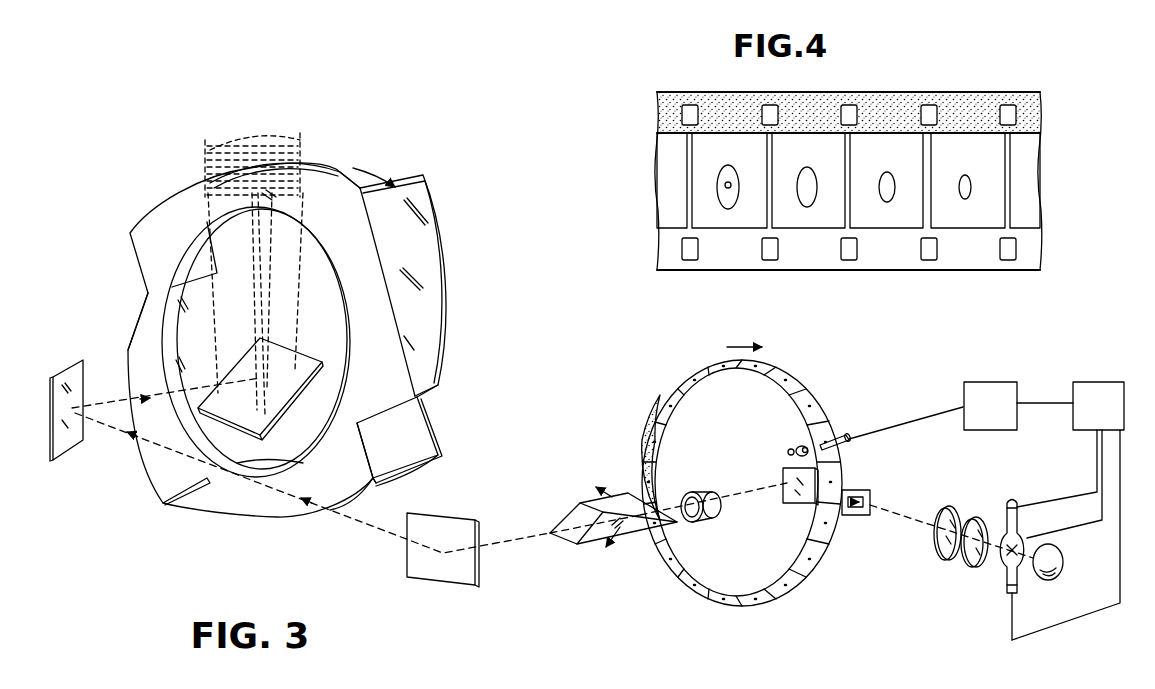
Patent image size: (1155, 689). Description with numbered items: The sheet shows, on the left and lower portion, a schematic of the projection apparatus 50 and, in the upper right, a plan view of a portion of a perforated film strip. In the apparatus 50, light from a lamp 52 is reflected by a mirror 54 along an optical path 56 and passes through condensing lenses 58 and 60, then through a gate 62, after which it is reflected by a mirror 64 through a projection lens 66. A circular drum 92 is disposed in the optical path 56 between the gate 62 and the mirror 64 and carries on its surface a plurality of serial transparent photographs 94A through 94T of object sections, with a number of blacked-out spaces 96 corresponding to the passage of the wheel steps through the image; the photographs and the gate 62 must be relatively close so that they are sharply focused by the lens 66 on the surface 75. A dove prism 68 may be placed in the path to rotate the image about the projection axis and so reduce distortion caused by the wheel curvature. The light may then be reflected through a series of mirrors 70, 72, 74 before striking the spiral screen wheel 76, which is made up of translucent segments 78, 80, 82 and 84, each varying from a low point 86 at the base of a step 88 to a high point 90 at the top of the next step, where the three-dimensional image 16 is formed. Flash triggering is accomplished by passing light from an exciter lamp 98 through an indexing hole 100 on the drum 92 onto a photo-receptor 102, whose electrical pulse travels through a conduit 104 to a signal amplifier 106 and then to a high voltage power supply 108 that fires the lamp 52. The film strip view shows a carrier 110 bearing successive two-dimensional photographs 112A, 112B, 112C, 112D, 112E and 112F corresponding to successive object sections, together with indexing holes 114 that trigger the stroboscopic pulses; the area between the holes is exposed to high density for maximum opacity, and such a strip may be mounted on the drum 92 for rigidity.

In FIG. 3, the three-dimensional image 16 is at (237, 140).
In FIG. 3, the apparatus 50 is at (386, 569).
In FIG. 3, the lamp 52 is at (1018, 588).
In FIG. 3, the mirror 54 is at (1053, 573).
In FIG. 3, the optical path 56 is at (897, 514).
In FIG. 3, the condensing lens 58 is at (968, 567).
In FIG. 3, the condensing lens 60 is at (943, 558).
In FIG. 3, the gate 62 is at (843, 512).
In FIG. 3, the mirror 64 is at (787, 504).
In FIG. 3, the projection lens 66 is at (703, 493).
In FIG. 3, the dove prism 68 is at (585, 547).
In FIG. 3, the mirror 70 is at (437, 596).
In FIG. 3, the mirror 72 is at (67, 370).
In FIG. 3, the mirror 74 is at (273, 427).
In FIG. 3, the surface 75 is at (440, 345).
In FIG. 3, the spiral screen wheel 76 is at (456, 312).
In FIG. 3, the segment 78 is at (187, 187).
In FIG. 3, the segment 80 is at (443, 243).
In FIG. 3, the segment 82 is at (280, 520).
In FIG. 3, the segment 84 is at (163, 340).
In FIG. 3, the low point 86 is at (343, 421).
In FIG. 3, the step 88 is at (365, 454).
In FIG. 3, the high point 90 is at (371, 481).
In FIG. 3, the circular drum 92 is at (806, 395).
In FIG. 3, the transparent photograph 94A is at (820, 424).
In FIG. 3, the transparent photograph 94T is at (739, 482).
In FIG. 3, the blacked-out space 96 is at (650, 432).
In FIG. 3, the exciter lamp 98 is at (788, 450).
In FIG. 3, the indexing hole 100 is at (808, 446).
In FIG. 3, the photo-receptor 102 is at (842, 442).
In FIG. 3, the conduit 104 is at (948, 405).
In FIG. 3, the signal amplifier 106 is at (995, 382).
In FIG. 3, the high voltage power supply 108 is at (1097, 382).
In FIG. 4, the carrier 110 is at (917, 90).
In FIG. 4, the two-dimensional photograph 112A is at (1038, 205).
In FIG. 4, the two-dimensional photograph 112B is at (950, 220).
In FIG. 4, the two-dimensional photograph 112C is at (872, 220).
In FIG. 4, the two-dimensional photograph 112D is at (793, 222).
In FIG. 4, the two-dimensional photograph 112E is at (710, 223).
In FIG. 4, the two-dimensional photograph 112F is at (668, 170).
In FIG. 4, the indexing hole 114 is at (938, 108).